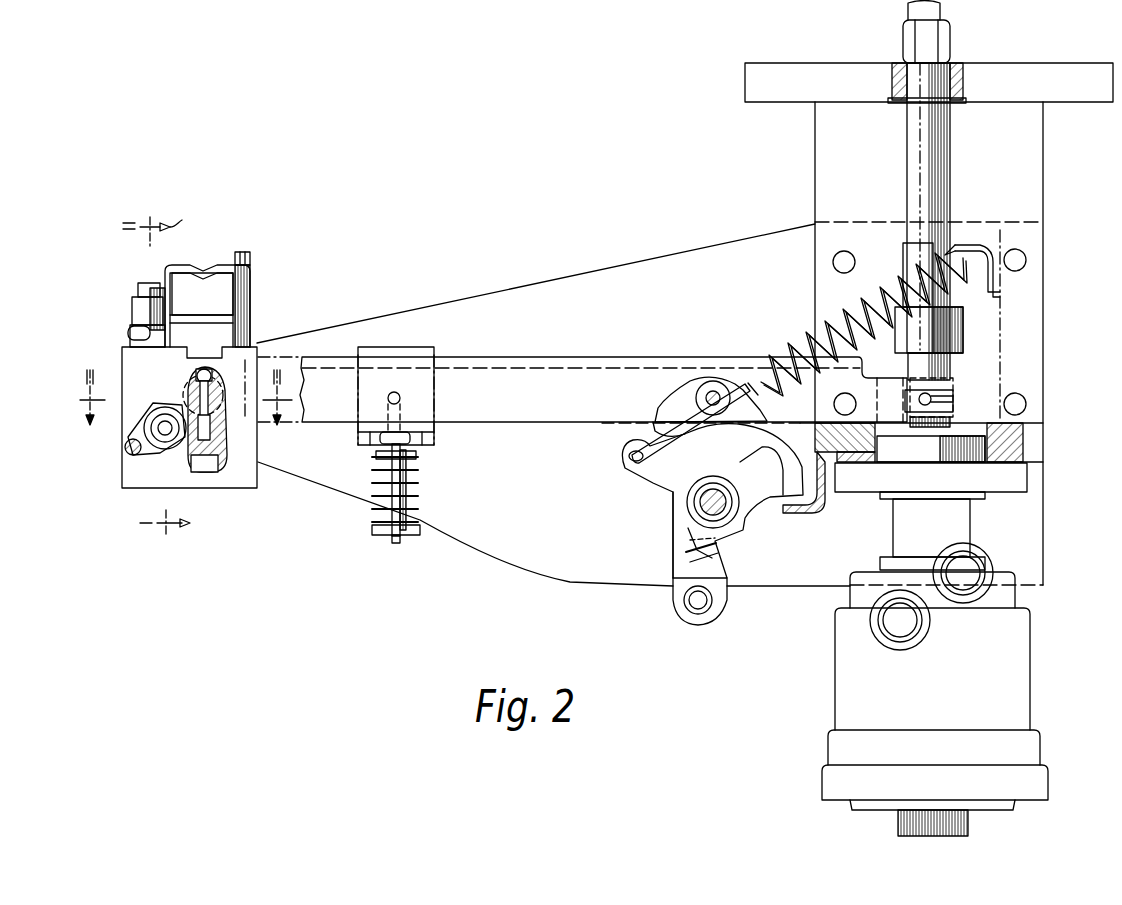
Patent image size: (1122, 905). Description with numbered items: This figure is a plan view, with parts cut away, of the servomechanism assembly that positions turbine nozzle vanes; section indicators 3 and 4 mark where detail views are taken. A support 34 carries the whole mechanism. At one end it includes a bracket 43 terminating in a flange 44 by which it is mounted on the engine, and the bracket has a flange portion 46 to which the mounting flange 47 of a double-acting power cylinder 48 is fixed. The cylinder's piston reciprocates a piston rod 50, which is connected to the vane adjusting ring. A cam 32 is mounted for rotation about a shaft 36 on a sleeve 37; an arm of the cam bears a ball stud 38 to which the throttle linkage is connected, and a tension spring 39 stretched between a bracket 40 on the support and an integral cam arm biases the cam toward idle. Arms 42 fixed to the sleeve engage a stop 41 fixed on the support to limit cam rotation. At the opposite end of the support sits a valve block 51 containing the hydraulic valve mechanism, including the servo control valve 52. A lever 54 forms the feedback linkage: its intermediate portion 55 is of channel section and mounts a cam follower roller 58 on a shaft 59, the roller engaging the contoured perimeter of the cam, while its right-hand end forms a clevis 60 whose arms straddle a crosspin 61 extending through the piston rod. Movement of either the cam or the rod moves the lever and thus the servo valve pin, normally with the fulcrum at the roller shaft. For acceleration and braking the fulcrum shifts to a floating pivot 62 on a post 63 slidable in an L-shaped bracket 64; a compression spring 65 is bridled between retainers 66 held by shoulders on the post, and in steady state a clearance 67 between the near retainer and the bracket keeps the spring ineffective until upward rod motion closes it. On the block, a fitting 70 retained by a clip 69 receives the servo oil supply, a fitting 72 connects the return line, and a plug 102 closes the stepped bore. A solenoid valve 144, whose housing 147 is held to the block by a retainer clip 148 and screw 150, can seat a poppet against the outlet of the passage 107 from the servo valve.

The section line 3- 3 is at (159, 380).
The section line 4- 4 is at (176, 414).
The cam 32 is at (675, 420).
The support 34 is at (508, 560).
The shaft 36 is at (700, 505).
The sleeve 37 is at (700, 528).
The ball stud 38 is at (708, 612).
The tension spring 39 is at (805, 332).
The bracket 40 is at (1000, 294).
The stop 41 is at (826, 512).
The arms 42 is at (722, 564).
The bracket 43 is at (1040, 170).
The flange 44 is at (1055, 72).
The flange portion 46 is at (1025, 440).
The mounting flange 47 is at (1022, 482).
The power cylinder 48 is at (1022, 643).
The piston rod 50 is at (915, 170).
The valve block 51 is at (133, 474).
The servo control valve 52 is at (280, 357).
The lever 54 is at (548, 358).
The intermediate portion 55 is at (667, 378).
The cam follower roller 58 is at (749, 382).
The shaft 59 is at (713, 391).
The clevis 60 is at (946, 395).
The crosspin 61 is at (946, 409).
The floating pivot 62 is at (392, 396).
The post 63 is at (392, 490).
The L-shaped bracket 64 is at (430, 433).
The compression spring 65 is at (416, 482).
The retainers 66 is at (380, 458).
The clearance 67 is at (375, 452).
The clip 69 is at (136, 438).
The fitting 70 is at (166, 440).
The fitting 72 is at (135, 310).
The plug 102 is at (205, 472).
The passage 107 is at (203, 382).
The solenoid valve 144 is at (234, 303).
The solenoid valve housing 147 is at (238, 284).
The retainer clip 148 is at (188, 266).
The screw 150 is at (243, 252).